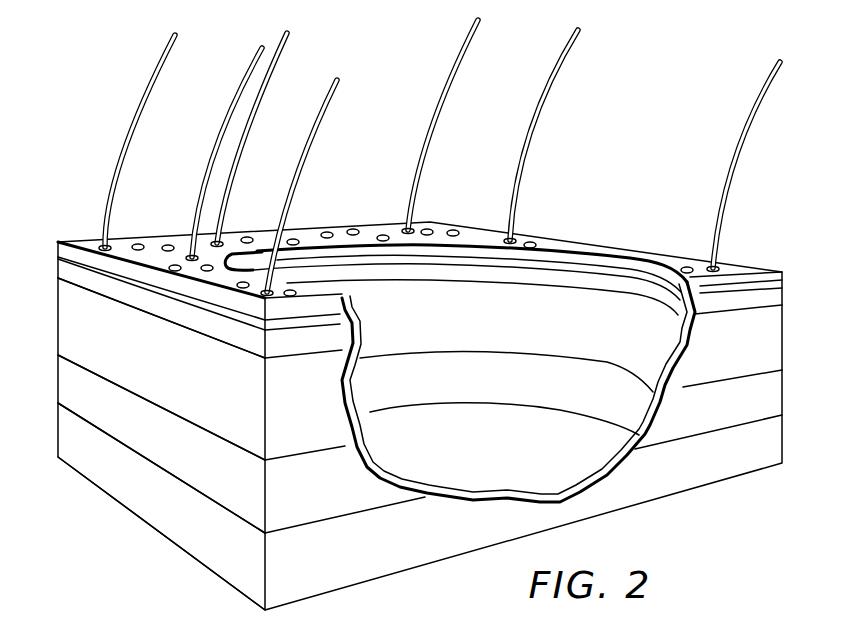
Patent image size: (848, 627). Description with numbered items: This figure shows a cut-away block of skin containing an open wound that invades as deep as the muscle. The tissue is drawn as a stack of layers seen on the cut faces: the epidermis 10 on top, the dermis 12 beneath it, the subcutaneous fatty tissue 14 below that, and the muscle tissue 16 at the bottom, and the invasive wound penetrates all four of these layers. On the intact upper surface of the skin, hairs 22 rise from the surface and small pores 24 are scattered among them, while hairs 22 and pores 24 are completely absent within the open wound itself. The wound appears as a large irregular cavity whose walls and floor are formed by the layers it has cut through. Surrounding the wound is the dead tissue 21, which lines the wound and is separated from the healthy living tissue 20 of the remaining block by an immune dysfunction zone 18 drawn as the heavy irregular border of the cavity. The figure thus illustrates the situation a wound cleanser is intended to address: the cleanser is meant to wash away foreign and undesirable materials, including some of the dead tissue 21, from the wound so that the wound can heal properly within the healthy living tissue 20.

The epidermis 10 is at (51, 243).
The dermis 12 is at (51, 282).
The subcutaneous fatty tissue 14 is at (51, 357).
The muscle tissue 16 is at (51, 405).
The immune dysfunction zone 18 is at (366, 470).
The healthy living tissue 20 is at (342, 508).
The dead tissue 21 is at (478, 357).
The hairs 22 is at (117, 165).
The pore 24 is at (140, 245).